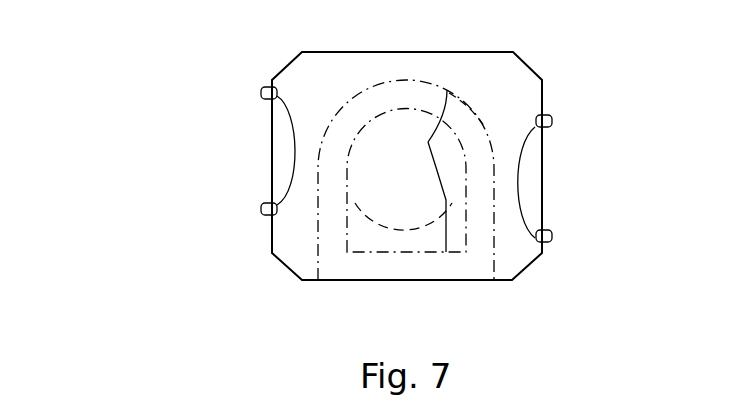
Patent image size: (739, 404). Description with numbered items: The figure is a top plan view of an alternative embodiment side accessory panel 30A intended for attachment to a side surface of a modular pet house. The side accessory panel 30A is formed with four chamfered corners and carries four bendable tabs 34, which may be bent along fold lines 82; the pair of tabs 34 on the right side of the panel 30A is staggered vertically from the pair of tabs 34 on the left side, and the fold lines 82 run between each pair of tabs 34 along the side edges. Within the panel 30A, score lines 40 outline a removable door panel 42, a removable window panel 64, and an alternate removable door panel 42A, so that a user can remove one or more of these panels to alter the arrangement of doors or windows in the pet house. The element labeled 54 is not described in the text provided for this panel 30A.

The side accessory panel 30A is at (110, 97).
The bendable tab 34 is at (260, 95).
The score line 40 is at (486, 119).
The removable door panel 42 is at (362, 95).
The alternate removable door panel 42A is at (393, 252).
The housing 54 is at (527, 62).
The removable window panel 64 is at (414, 223).
The fold line 82 is at (406, 167).